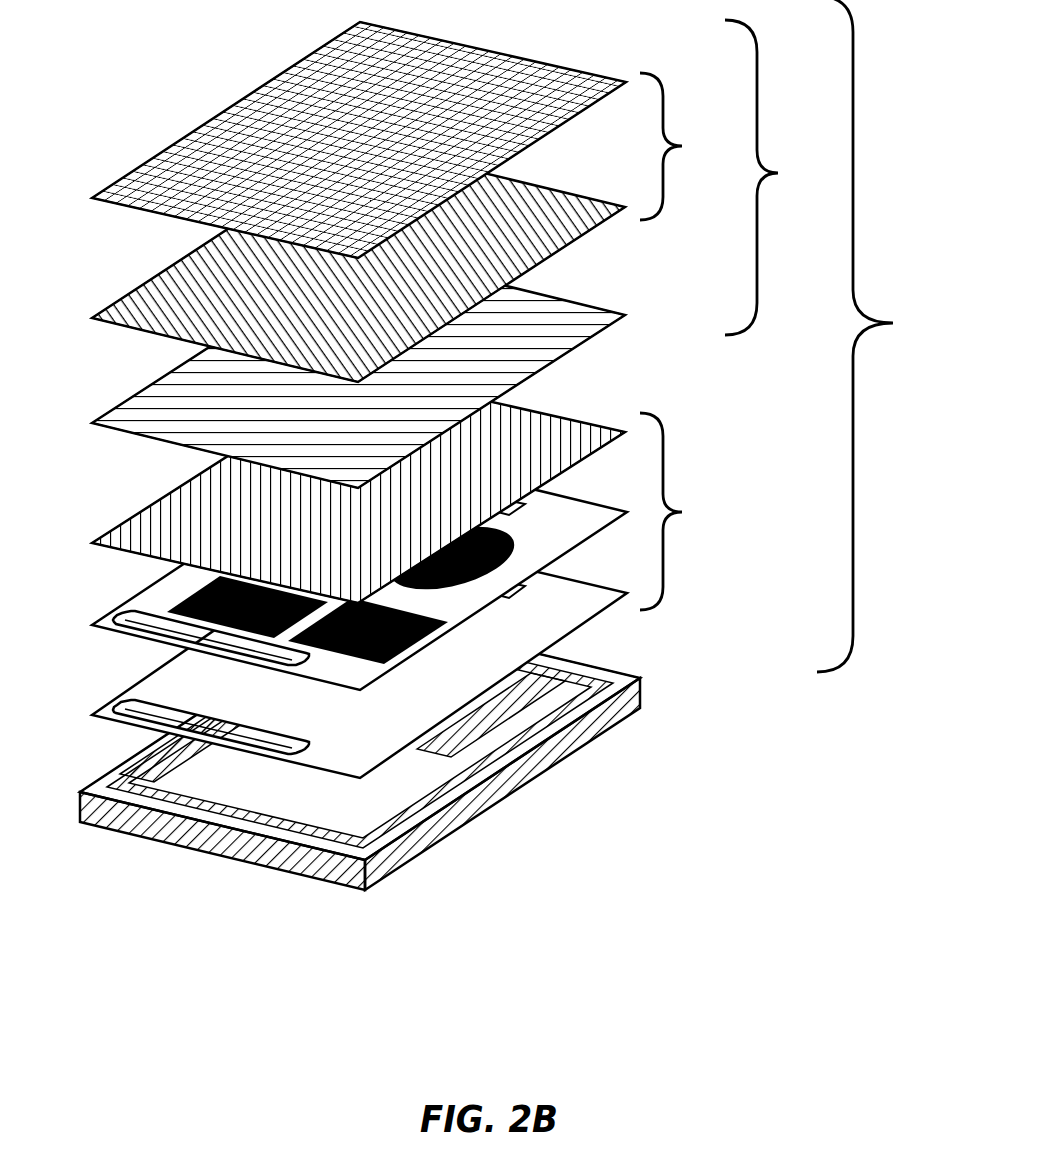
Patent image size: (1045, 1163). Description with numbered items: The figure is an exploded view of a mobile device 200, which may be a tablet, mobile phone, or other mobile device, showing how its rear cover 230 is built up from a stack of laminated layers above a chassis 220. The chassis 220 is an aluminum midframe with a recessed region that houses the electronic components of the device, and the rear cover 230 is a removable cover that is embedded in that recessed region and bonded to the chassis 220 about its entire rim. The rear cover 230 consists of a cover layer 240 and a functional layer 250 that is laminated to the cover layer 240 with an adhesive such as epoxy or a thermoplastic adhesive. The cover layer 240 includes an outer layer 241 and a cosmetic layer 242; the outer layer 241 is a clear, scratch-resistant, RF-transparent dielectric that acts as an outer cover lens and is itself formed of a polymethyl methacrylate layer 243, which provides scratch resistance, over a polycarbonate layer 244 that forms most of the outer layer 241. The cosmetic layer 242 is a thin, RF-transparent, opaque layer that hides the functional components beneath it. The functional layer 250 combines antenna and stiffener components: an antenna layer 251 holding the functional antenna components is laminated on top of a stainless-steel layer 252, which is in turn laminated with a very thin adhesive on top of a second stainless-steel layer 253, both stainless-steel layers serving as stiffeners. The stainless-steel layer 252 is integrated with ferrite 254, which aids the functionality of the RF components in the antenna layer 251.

The mobile device 200 is at (272, 54).
The chassis 220 is at (117, 767).
The rear cover 230 is at (882, 336).
The cover layer 240 is at (779, 177).
The outer layer 241 is at (687, 146).
The cosmetic layer 242 is at (148, 388).
The polymethyl methacrylate (PMMA) layer 243 is at (208, 120).
The polycarbonate layer 244 is at (160, 273).
The functional layer 250 is at (690, 511).
The antenna layer 251 is at (157, 500).
The stainless-steel layer 252 is at (343, 644).
The stainless-steel layer 253 is at (142, 684).
The ferrite 254 is at (420, 647).